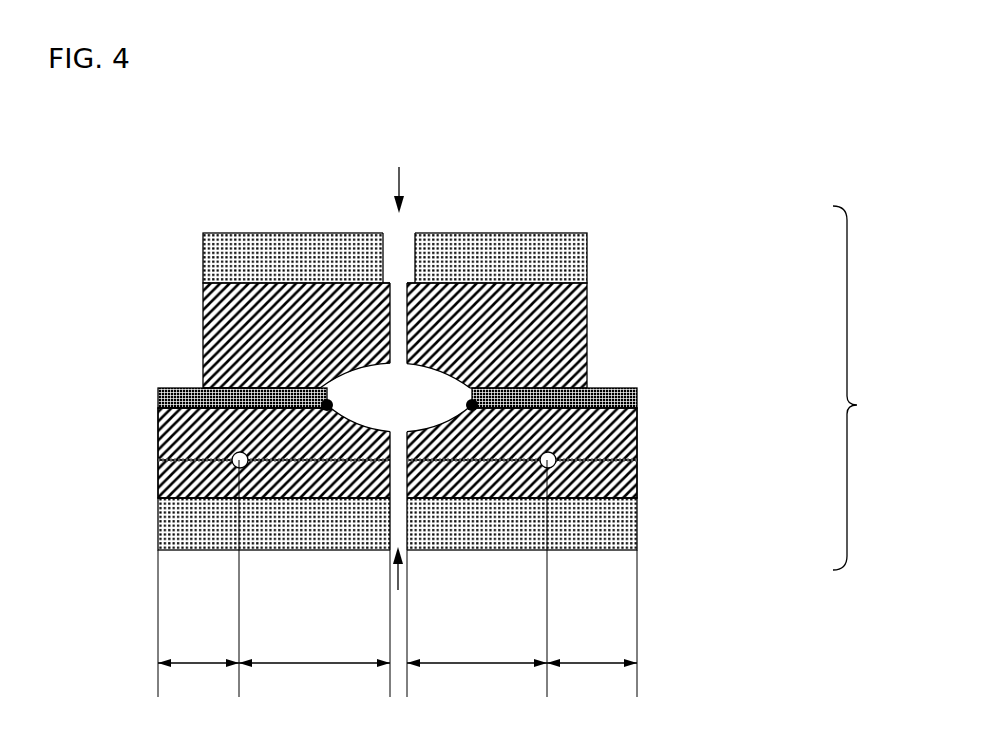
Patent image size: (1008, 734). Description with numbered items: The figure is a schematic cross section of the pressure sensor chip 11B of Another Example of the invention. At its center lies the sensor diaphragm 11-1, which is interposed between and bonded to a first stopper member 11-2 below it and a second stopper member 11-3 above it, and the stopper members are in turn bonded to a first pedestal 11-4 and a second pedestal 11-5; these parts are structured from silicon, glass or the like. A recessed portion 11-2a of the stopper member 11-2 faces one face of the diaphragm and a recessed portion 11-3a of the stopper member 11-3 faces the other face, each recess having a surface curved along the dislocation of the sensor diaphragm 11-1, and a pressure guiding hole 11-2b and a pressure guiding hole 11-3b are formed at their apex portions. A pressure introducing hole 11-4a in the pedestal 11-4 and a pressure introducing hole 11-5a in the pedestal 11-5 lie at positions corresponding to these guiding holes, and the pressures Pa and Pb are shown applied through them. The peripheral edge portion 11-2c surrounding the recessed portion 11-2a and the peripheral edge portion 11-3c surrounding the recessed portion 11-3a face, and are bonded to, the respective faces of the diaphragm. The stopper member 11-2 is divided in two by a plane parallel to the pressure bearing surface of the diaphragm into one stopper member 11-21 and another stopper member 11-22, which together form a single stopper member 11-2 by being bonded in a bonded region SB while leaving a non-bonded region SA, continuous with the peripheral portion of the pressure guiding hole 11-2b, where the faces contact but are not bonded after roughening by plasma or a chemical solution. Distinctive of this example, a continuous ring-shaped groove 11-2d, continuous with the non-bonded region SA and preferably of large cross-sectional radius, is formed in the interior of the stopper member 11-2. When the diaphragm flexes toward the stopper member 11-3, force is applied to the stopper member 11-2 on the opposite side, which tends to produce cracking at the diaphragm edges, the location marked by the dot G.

The pressure sensor chip 11B is at (869, 388).
The sensor diaphragm 11-1 is at (637, 400).
The first stopper member 11-2 is at (638, 440).
The one stopper member 11-21 is at (175, 436).
The other stopper member 11-22 is at (173, 473).
The recessed portion 11-2a is at (472, 406).
The pressure guiding hole 11-2b is at (327, 410).
The peripheral edge portion 11-2c is at (218, 408).
The ring-shaped groove 11-2d is at (556, 458).
The second stopper member 11-3 is at (587, 315).
The recessed portion 11-3a is at (422, 383).
The pressure guiding hole 11-3b is at (327, 388).
The peripheral edge portion 11-3c is at (240, 387).
The first pedestal 11-4 is at (637, 537).
The pressure introducing hole 11-4a is at (392, 522).
The second pedestal 11-5 is at (587, 247).
The pressure introducing hole 11-5a is at (380, 236).
The dot indicating diaphragm edge location G is at (355, 378).
The pressure from below Pa is at (414, 570).
The pressure from above Pb is at (400, 168).
The non-bonded region SA is at (393, 623).
The bonded region SB is at (397, 578).